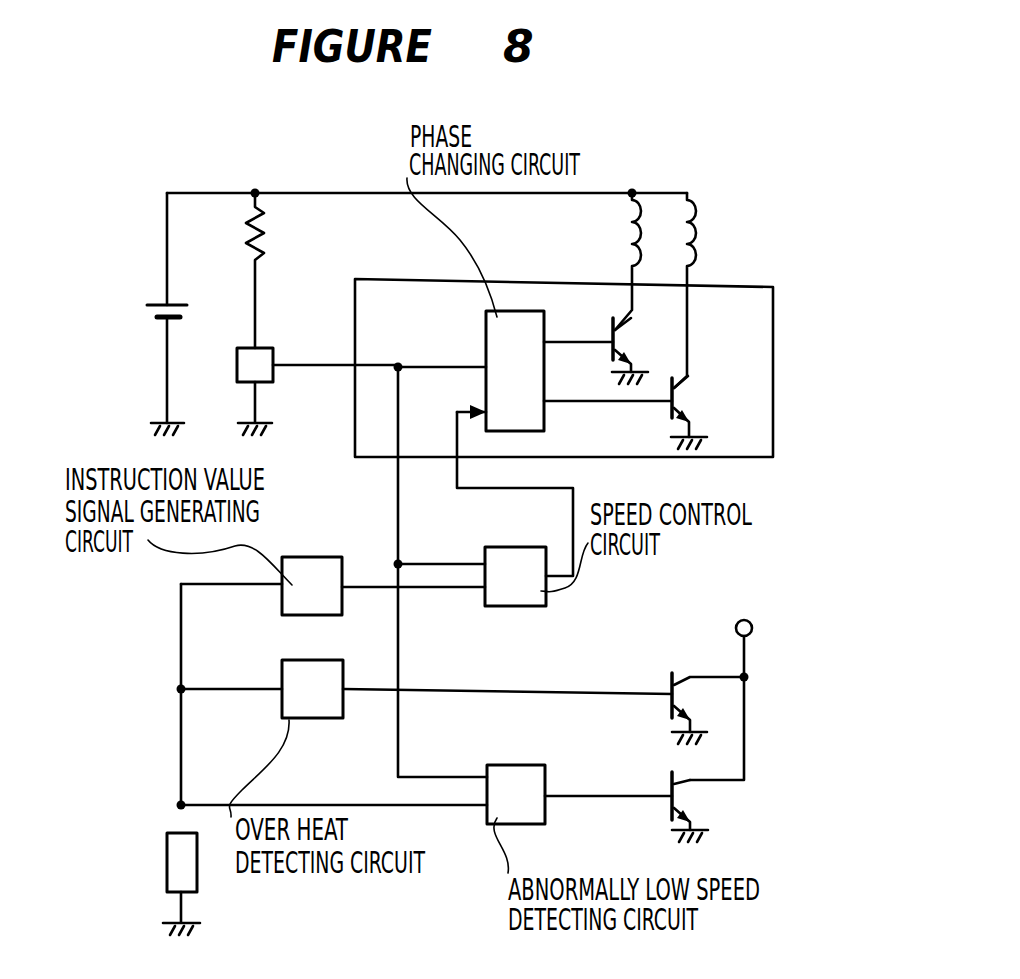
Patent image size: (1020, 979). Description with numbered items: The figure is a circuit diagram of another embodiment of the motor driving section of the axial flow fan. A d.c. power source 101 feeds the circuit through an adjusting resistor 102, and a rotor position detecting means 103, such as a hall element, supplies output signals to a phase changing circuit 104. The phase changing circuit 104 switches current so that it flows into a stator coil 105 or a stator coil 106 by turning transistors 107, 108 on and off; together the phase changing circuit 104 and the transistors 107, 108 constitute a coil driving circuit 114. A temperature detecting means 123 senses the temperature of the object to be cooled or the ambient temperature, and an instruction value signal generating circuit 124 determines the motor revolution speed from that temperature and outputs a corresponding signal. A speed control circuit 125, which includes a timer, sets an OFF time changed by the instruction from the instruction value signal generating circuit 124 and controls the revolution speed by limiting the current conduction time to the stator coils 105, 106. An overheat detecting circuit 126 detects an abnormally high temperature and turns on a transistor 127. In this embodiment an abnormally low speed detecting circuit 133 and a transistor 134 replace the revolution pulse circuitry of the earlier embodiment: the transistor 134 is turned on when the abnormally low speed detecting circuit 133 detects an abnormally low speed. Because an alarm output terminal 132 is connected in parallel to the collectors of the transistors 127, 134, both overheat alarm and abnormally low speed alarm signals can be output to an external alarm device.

The d.c. power source 101 is at (153, 318).
The adjusting resistor 102 is at (262, 225).
The rotor position detecting means 103 is at (268, 348).
The phase changing circuit 104 is at (486, 340).
The stator coil 105 is at (624, 241).
The stator coil 106 is at (698, 236).
The transistor 107 is at (624, 338).
The transistor 108 is at (680, 400).
The coil driving circuit 114 is at (773, 305).
The temperature detecting means 123 is at (173, 832).
The instruction value signal generating circuit 124 is at (312, 557).
The speed control circuit 125 is at (504, 547).
The overheat detecting circuit 126 is at (338, 660).
The transistor 127 is at (672, 680).
The alarm output terminal 132 is at (740, 620).
The abnormally low speed detecting circuit 133 is at (505, 765).
The transistor 134 is at (672, 800).